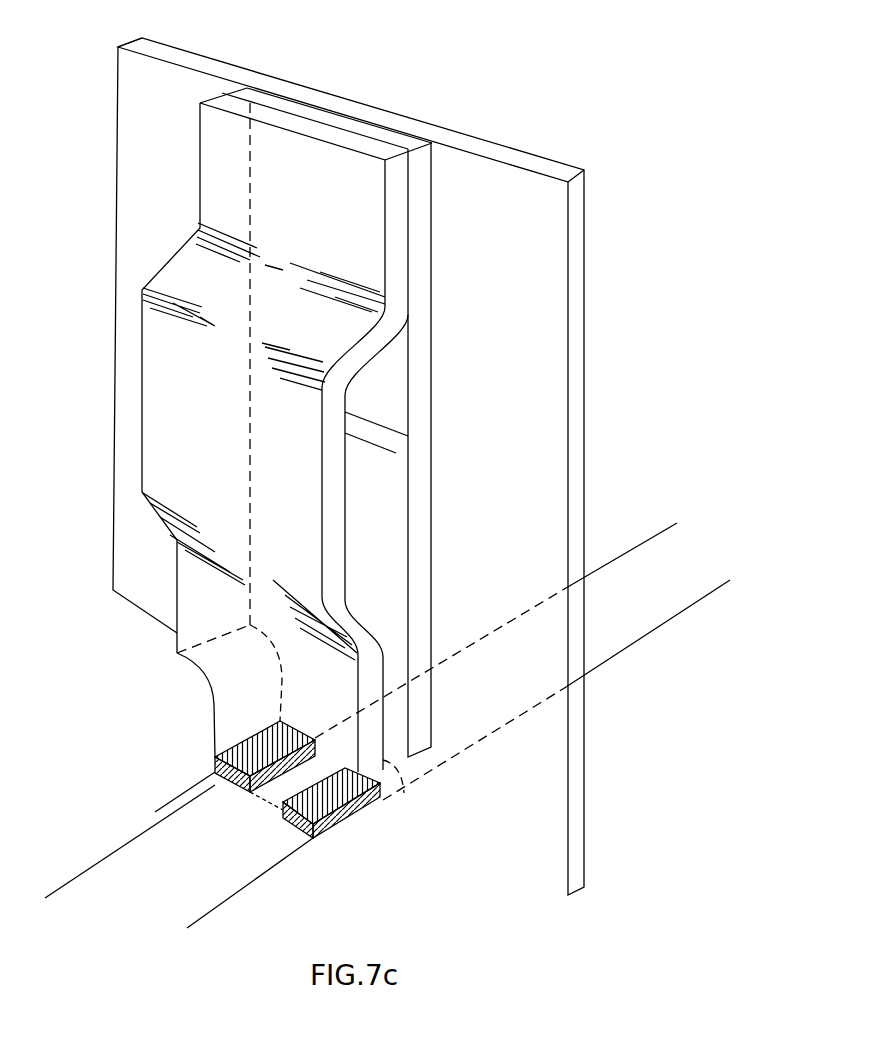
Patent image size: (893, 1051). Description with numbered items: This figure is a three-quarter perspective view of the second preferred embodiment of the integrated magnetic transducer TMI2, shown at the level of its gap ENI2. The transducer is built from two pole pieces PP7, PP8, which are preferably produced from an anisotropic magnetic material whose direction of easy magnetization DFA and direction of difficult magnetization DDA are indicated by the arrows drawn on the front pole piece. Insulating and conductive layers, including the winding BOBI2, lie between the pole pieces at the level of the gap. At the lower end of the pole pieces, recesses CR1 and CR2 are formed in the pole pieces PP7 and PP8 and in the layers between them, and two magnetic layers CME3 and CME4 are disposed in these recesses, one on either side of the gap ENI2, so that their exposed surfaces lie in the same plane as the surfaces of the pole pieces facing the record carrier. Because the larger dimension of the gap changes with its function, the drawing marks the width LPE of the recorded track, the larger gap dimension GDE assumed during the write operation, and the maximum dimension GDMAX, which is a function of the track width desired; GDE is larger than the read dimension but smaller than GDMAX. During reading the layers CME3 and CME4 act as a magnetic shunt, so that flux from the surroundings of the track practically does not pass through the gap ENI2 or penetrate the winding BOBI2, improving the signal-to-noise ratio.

The pole piece PP7 is at (222, 102).
The pole piece PP8 is at (263, 98).
The integrated transducer TMI2 is at (460, 178).
The winding BOBI2 is at (405, 500).
The direction of difficult magnetization DDA is at (235, 353).
The direction of easy magnetization DFA is at (274, 521).
The recess CR1 is at (255, 722).
The recess CR2 is at (398, 791).
The magnetic layer CME3 is at (216, 760).
The magnetic layer CME4 is at (312, 830).
The gap ENI2 is at (278, 795).
The maximum gap dimension GDMAX is at (183, 798).
The track width LPE is at (205, 917).
The larger gap dimension during write GDE is at (172, 887).